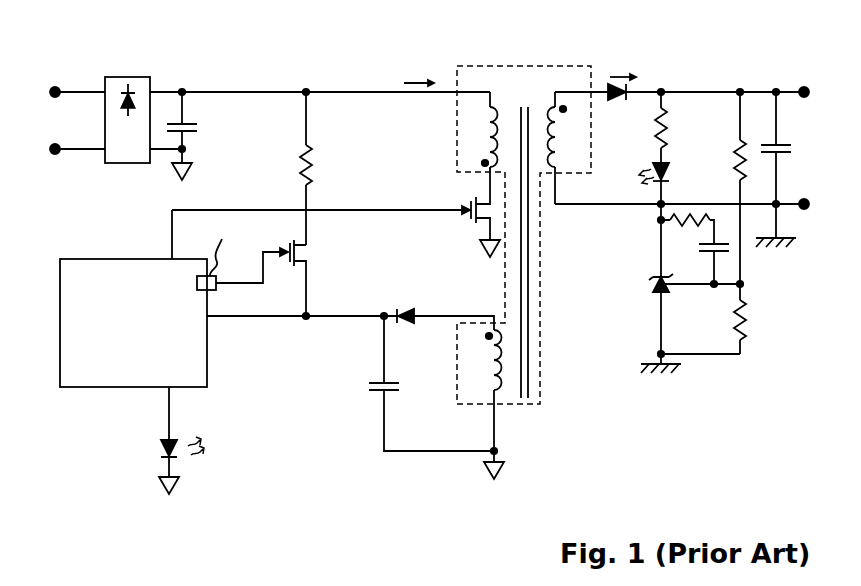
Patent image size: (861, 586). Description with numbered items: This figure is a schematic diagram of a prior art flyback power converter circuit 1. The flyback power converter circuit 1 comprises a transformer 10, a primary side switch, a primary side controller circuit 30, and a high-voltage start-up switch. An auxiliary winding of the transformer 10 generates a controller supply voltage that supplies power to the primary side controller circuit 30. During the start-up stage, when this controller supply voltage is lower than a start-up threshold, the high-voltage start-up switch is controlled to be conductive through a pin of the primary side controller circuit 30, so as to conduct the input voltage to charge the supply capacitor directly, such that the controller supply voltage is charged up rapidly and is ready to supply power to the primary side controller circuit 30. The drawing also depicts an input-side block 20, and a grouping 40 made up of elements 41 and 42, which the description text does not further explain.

The flyback power converter circuit 1 is at (381, 53).
The transformer 10 is at (541, 66).
The rectifier circuit 20 is at (127, 120).
The primary side controller circuit 30 is at (133, 323).
The photocoupler 40 is at (405, 344).
The light receiving element 41 is at (157, 445).
The light emitting element 42 is at (668, 167).